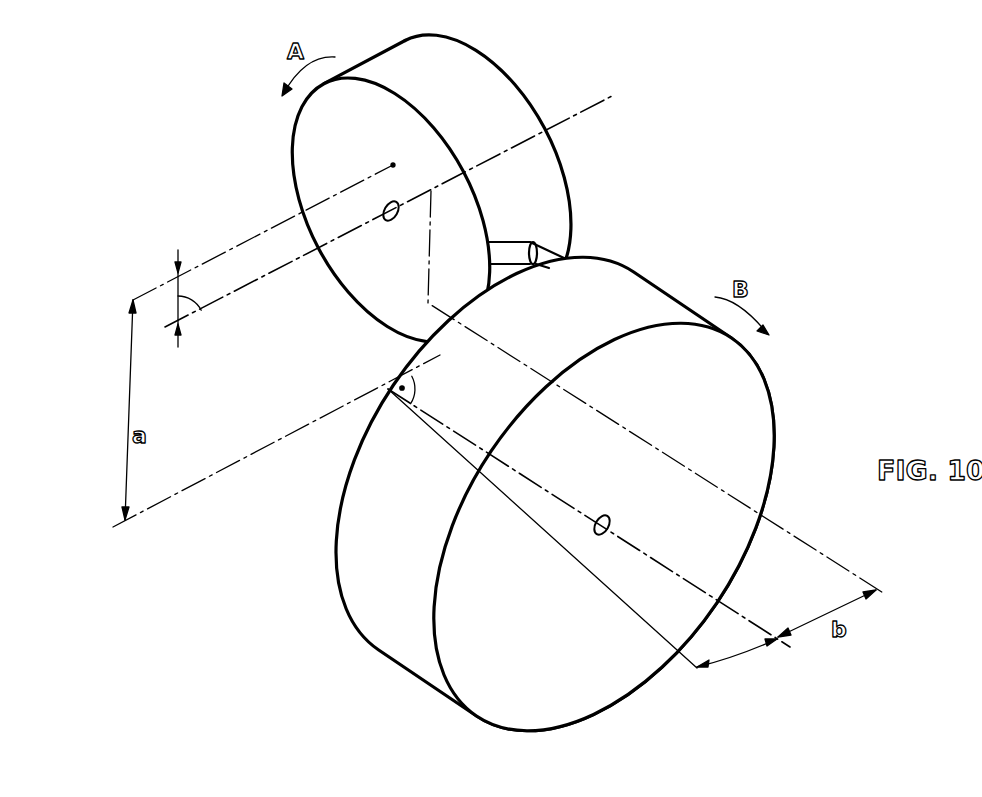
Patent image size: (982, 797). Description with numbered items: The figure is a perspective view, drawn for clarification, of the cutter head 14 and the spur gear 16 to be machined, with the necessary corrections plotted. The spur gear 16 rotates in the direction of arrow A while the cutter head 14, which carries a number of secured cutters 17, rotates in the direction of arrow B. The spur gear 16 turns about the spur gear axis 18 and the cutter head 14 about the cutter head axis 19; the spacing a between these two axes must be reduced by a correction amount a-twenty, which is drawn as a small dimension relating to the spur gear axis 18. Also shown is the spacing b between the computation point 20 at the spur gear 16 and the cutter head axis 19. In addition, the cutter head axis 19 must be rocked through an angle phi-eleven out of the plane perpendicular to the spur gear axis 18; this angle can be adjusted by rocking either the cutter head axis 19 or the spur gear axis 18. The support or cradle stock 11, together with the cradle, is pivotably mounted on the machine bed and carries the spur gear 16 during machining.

The cutter head 14 is at (353, 528).
The spur gear 16 is at (307, 188).
The cutters 17 is at (545, 252).
The spur gear axis 18 is at (248, 287).
The cutter head axis 19 is at (664, 564).
The computation point 20 is at (203, 298).
The support or cradle stock 11 is at (583, 541).